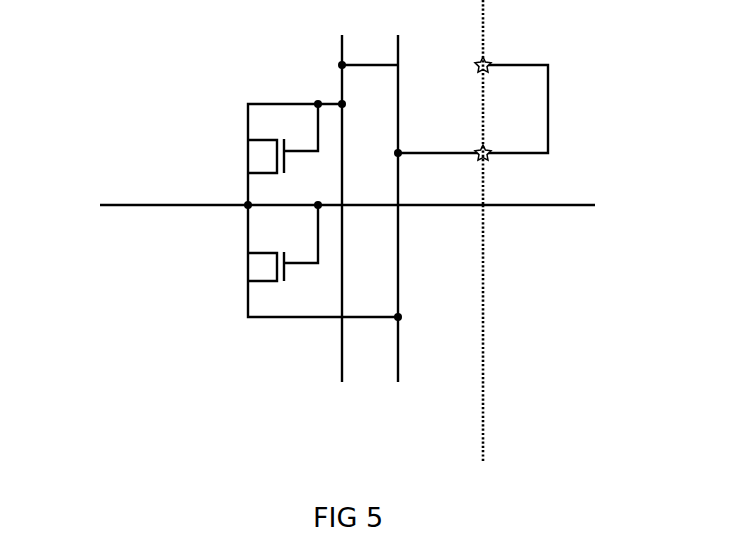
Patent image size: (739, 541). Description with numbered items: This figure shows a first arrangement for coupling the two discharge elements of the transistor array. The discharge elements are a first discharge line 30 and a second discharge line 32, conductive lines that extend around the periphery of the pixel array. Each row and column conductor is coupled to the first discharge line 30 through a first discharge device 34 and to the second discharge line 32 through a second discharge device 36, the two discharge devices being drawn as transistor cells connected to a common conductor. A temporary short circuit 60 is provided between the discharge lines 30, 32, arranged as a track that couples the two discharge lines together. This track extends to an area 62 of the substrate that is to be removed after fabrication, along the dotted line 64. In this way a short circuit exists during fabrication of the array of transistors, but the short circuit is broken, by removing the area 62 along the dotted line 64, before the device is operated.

The first discharge line 30 is at (342, 48).
The second discharge line 32 is at (398, 48).
The first discharge device 34 is at (158, 161).
The second discharge device 36 is at (176, 265).
The temporary short circuit 60 is at (548, 123).
The area of the substrate to be removed 62 is at (560, 27).
The dotted line 64 is at (483, 325).